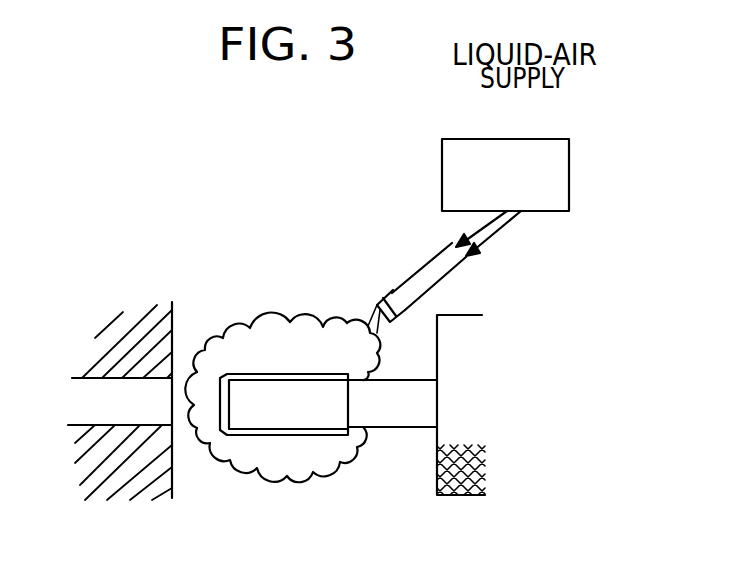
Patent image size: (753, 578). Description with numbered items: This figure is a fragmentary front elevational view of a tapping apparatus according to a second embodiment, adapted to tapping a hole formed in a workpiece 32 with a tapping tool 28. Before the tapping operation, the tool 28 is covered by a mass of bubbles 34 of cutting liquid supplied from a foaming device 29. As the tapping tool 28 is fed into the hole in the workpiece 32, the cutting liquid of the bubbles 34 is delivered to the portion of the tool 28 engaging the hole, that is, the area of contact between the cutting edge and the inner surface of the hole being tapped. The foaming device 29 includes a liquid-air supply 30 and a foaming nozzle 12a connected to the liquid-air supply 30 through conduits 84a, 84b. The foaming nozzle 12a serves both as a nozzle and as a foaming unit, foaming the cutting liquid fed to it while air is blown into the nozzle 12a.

The tapping tool 28 is at (300, 400).
The foaming device 29 is at (416, 231).
The liquid-air supply 30 is at (545, 180).
The workpiece 32 is at (118, 460).
The bubbles 34 is at (250, 343).
The foaming nozzle 12a is at (405, 314).
The conduit 84a is at (505, 222).
The conduit 84b is at (490, 237).